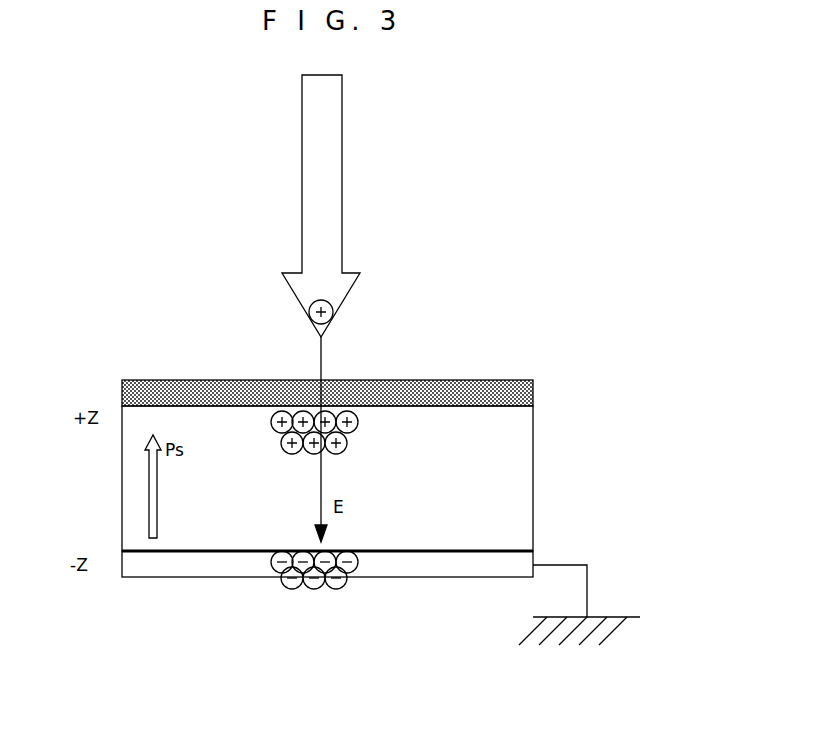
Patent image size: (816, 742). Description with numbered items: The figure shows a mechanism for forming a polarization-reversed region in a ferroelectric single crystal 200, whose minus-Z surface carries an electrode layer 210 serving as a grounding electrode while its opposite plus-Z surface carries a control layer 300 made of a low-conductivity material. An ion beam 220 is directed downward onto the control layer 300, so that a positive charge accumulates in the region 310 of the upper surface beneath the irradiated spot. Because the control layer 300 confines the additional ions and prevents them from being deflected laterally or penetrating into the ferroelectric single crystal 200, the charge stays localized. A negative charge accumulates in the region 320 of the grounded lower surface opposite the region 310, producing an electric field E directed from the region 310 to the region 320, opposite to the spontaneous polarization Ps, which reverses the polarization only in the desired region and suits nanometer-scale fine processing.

The ferroelectric single crystal 200 is at (505, 487).
The electrode layer 210 is at (147, 565).
The ion beam 220 is at (365, 270).
The control layer 300 is at (493, 390).
The region accumulating positive charge 310 is at (375, 375).
The region accumulating negative charge 320 is at (375, 592).